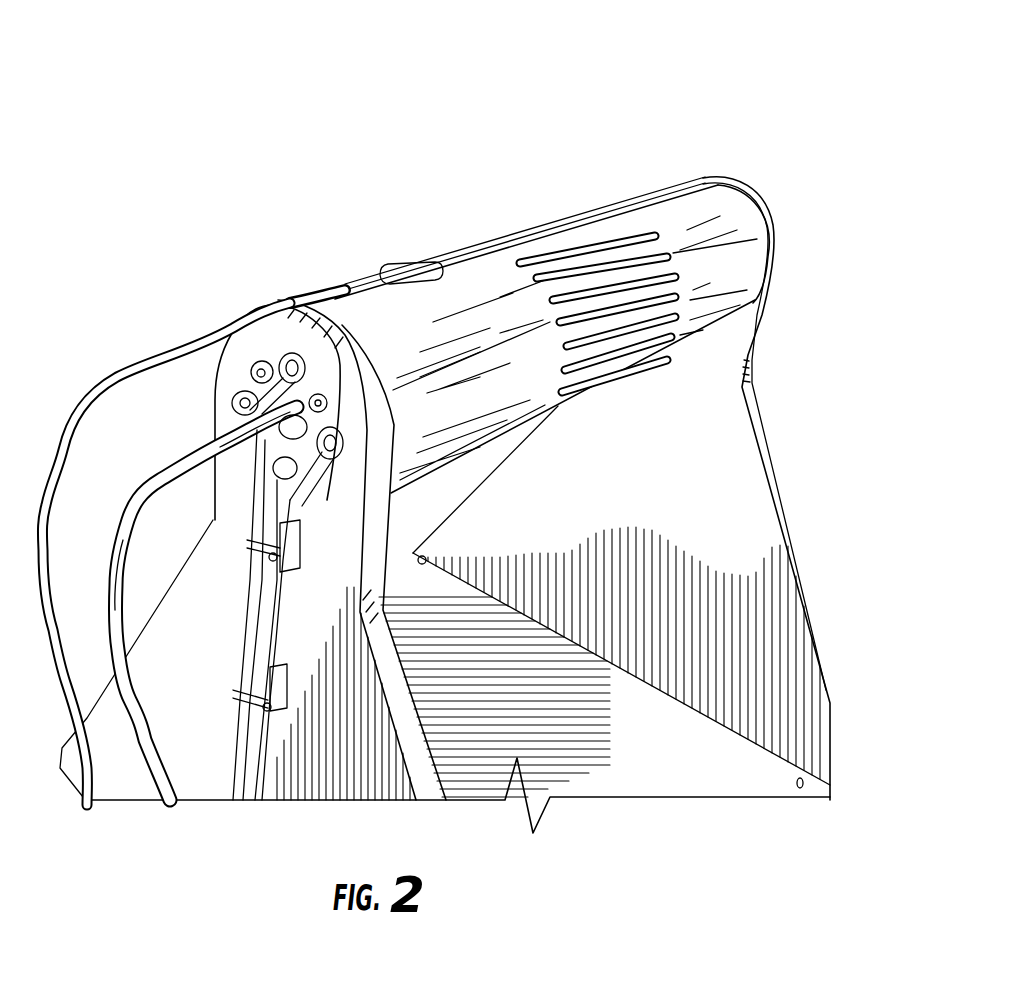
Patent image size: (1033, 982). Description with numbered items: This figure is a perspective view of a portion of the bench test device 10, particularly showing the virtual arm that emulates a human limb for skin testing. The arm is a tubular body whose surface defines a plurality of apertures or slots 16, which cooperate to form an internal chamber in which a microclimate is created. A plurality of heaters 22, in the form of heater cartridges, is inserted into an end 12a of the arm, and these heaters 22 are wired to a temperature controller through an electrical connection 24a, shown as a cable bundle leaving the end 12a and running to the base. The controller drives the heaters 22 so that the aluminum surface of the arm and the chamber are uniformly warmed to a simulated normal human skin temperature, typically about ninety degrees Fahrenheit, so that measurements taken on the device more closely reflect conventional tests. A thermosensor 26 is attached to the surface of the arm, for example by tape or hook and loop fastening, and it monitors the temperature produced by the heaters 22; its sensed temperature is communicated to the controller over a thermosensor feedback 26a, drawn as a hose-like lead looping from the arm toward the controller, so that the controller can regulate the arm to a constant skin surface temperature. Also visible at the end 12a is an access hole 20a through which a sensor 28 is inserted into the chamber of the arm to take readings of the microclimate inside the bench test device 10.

The bench test device 10 is at (519, 163).
The slots 16 is at (637, 223).
The thermosensor 26 is at (419, 272).
The thermosensor feedback 26a is at (188, 350).
The access hole 20a is at (318, 398).
The heaters 22 is at (255, 371).
The end of the arm 12a is at (383, 527).
The sensor 28 is at (153, 770).
The electrical connection 24a is at (233, 760).